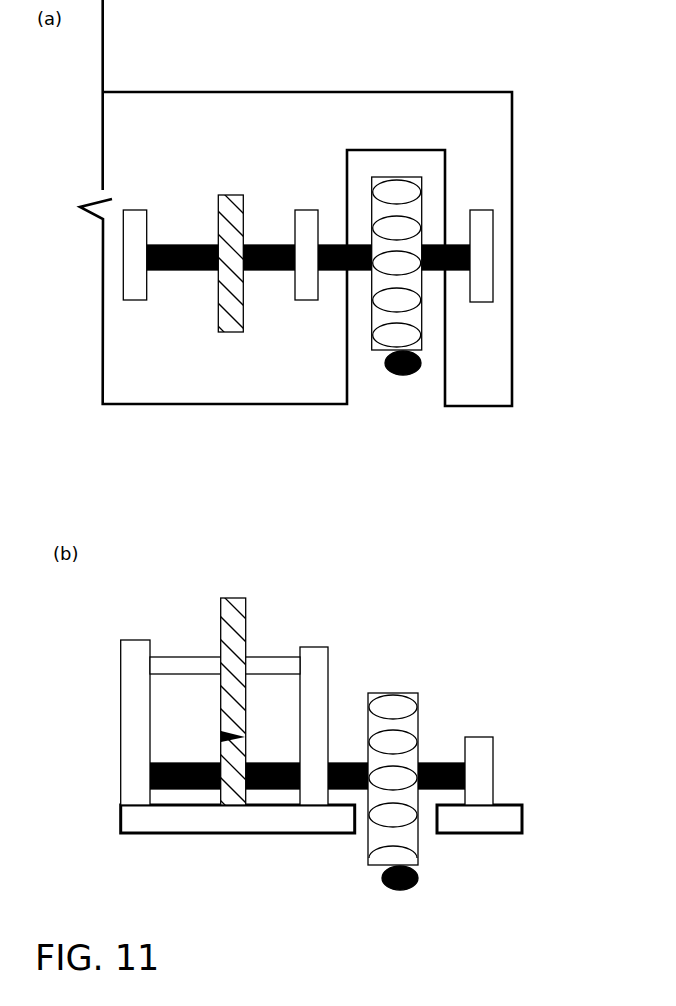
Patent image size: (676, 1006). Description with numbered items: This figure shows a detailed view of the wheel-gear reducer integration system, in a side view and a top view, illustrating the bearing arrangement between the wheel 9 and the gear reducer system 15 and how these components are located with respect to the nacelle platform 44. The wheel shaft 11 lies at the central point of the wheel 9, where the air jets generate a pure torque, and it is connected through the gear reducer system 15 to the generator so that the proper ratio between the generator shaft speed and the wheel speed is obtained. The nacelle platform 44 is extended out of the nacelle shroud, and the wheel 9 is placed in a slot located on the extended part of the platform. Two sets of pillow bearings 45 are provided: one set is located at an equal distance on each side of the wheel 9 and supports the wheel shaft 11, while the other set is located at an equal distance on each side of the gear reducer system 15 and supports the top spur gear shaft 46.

The nacelle platform 44 is at (197, 135).
The wheel shaft 11 is at (453, 245).
The pillow bearing 45 is at (139, 300).
The top spur gear shaft 46 is at (184, 657).
The gear reducer system 15 is at (229, 332).
The wheel 9 is at (377, 350).